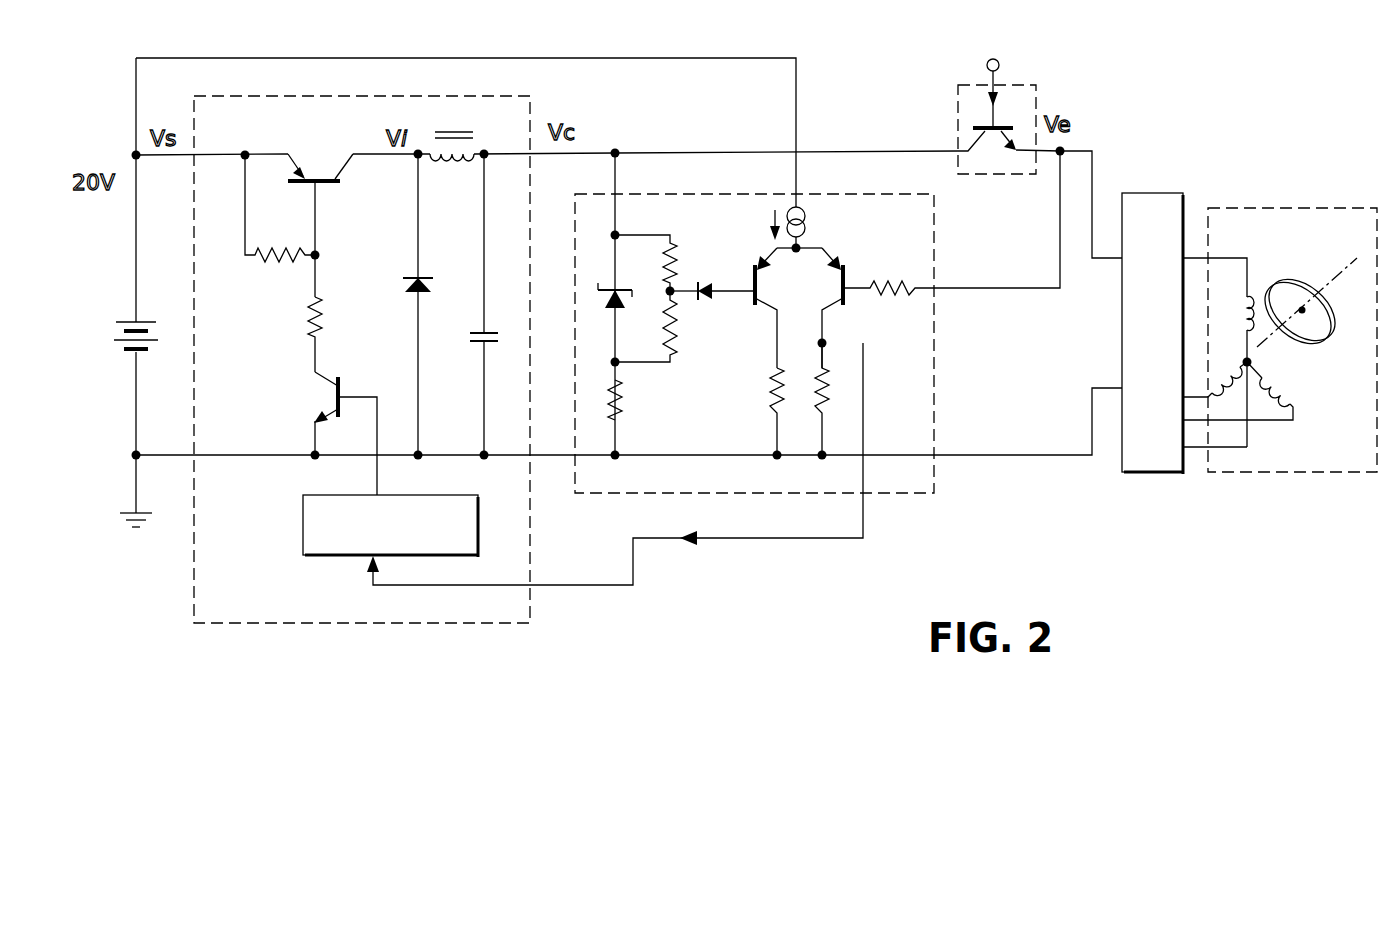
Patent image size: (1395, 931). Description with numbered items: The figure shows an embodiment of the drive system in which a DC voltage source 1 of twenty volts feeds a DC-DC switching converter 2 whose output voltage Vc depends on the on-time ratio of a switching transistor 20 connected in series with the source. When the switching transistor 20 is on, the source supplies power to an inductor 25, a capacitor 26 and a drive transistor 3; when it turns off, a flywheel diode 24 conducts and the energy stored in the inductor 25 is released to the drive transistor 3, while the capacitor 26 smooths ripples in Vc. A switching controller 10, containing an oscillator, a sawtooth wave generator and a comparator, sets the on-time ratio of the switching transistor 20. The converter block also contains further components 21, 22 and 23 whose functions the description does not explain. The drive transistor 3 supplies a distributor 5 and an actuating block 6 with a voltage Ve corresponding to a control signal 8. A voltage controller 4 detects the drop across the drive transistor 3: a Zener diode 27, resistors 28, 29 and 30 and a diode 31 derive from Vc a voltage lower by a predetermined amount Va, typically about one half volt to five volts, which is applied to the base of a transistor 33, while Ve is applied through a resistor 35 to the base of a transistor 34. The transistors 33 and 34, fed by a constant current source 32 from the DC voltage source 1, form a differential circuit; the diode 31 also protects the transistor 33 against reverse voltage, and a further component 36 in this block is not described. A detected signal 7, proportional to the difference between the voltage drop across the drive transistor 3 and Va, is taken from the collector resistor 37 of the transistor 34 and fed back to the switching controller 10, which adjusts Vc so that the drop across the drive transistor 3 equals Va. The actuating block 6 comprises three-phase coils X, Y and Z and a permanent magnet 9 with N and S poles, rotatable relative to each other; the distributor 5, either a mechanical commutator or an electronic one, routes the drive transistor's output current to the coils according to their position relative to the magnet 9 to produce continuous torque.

The DC voltage source 1 is at (115, 322).
The DC-DC switching converter 2 is at (476, 624).
The drive transistor 3 is at (1038, 86).
The voltage controller 4 is at (903, 494).
The distributor 5 is at (1145, 193).
The actuating block 6 is at (1235, 208).
The detected signal 7 is at (734, 540).
The control signal 8 is at (998, 78).
The permanent magnet 9 is at (1305, 284).
The switching controller 10 is at (482, 503).
The switching transistor 20 is at (328, 162).
The resistor 21 is at (280, 267).
The resistor 22 is at (325, 311).
The drive transistor 23 is at (319, 408).
The flywheel diode 24 is at (405, 278).
The inductor 25 is at (448, 173).
The capacitor 26 is at (471, 333).
The Zener diode 27 is at (628, 297).
The resistor 28 is at (622, 412).
The resistor 29 is at (673, 359).
The resistor 30 is at (676, 251).
The diode 31 is at (705, 282).
The constant current source 32 is at (806, 224).
The transistor 33 is at (766, 313).
The transistor 34 is at (848, 306).
The resistor 35 is at (885, 280).
The resistor 36 is at (769, 395).
The collector resistor 37 is at (812, 397).